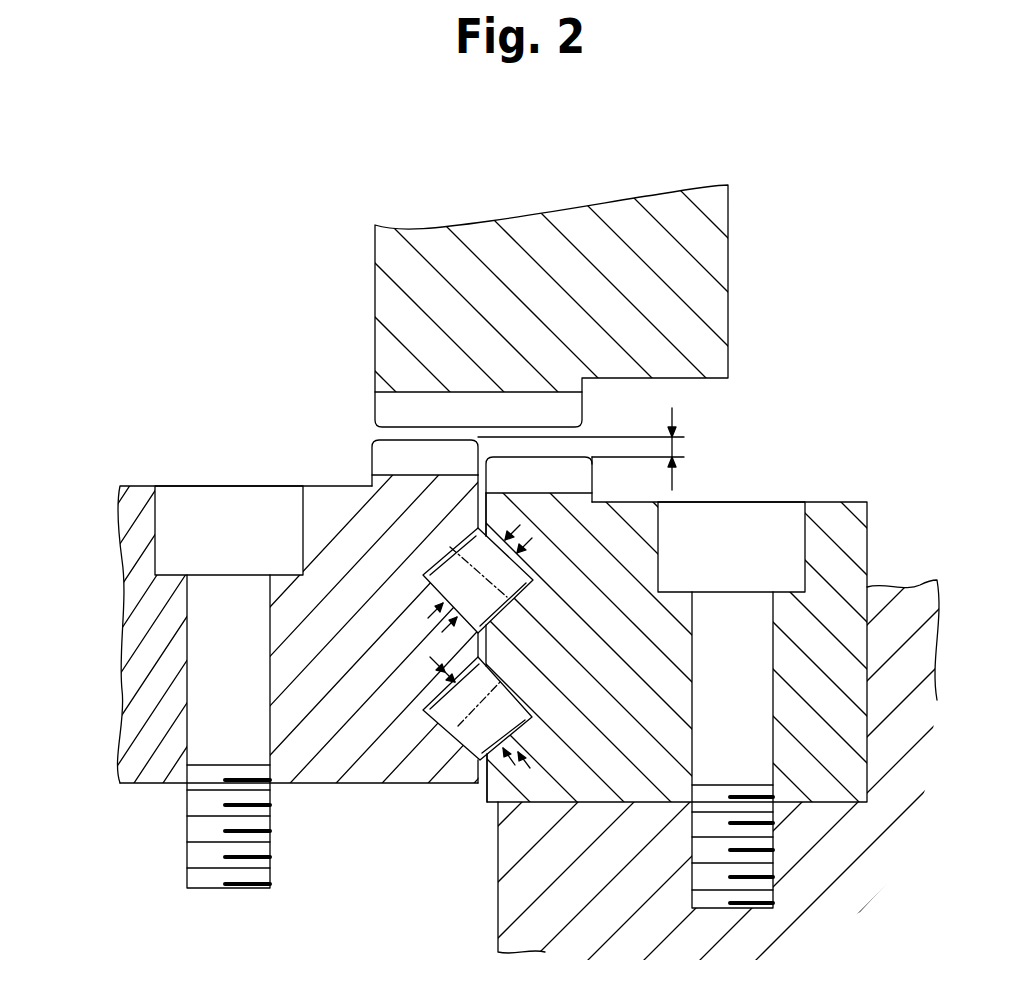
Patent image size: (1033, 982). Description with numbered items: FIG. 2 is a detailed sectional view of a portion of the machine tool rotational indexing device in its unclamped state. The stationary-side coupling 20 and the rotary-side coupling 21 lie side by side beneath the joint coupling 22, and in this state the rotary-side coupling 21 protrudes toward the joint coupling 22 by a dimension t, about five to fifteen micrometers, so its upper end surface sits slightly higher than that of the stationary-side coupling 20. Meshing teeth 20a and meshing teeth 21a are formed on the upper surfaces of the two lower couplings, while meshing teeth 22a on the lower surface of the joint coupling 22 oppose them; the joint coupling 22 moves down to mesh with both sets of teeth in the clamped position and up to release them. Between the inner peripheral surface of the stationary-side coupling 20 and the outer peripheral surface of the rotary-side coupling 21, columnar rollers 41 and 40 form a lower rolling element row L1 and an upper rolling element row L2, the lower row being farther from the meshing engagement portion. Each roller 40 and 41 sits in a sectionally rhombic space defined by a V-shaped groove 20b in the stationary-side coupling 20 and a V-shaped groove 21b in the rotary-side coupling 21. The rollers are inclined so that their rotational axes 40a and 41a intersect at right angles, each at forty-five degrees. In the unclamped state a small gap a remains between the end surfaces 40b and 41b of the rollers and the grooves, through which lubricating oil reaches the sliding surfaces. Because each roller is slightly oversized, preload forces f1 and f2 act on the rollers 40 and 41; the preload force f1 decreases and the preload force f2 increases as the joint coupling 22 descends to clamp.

The stationary-side coupling 20 is at (838, 498).
The meshing teeth 20a is at (593, 470).
The V-shaped groove 20b is at (533, 587).
The rotary-side coupling 21 is at (120, 584).
The meshing teeth 21a is at (372, 456).
The V-shaped groove 21b is at (430, 586).
The joint coupling 22 is at (733, 257).
The meshing teeth 22a is at (374, 408).
The roller 40 is at (455, 556).
The rotational axis 40a is at (520, 547).
The end surface 40b is at (504, 514).
The roller 41 is at (463, 767).
The rotational axis 41a is at (478, 775).
The end surface 41b is at (445, 660).
The dimension t is at (683, 440).
The gap a is at (448, 543).
The lower rolling element row L1 is at (430, 753).
The upper rolling element row L2 is at (425, 539).
The preload force f1 is at (438, 610).
The preload force f2 is at (535, 760).